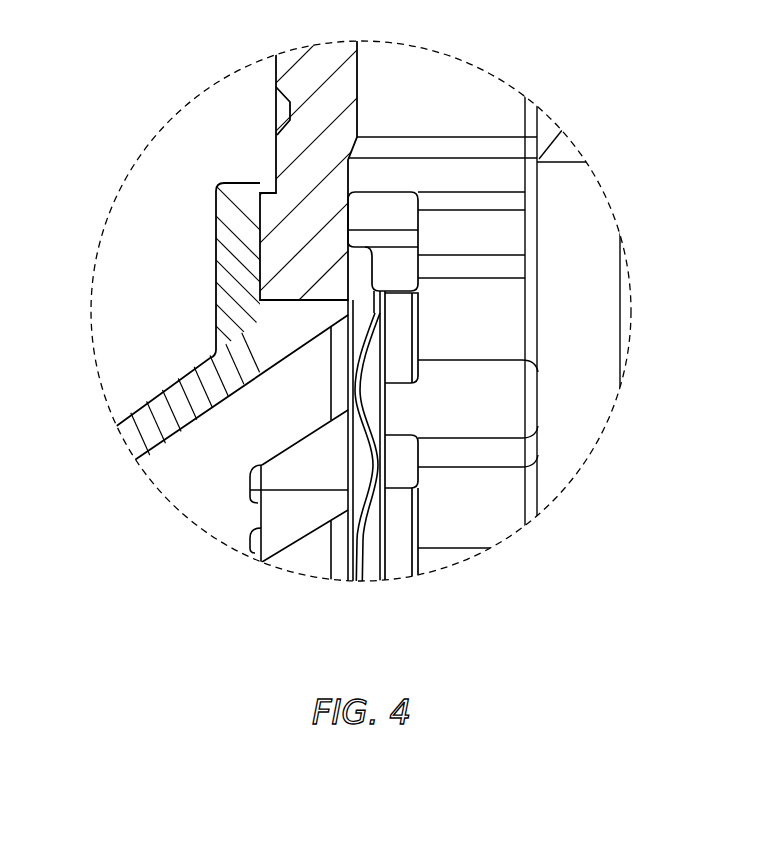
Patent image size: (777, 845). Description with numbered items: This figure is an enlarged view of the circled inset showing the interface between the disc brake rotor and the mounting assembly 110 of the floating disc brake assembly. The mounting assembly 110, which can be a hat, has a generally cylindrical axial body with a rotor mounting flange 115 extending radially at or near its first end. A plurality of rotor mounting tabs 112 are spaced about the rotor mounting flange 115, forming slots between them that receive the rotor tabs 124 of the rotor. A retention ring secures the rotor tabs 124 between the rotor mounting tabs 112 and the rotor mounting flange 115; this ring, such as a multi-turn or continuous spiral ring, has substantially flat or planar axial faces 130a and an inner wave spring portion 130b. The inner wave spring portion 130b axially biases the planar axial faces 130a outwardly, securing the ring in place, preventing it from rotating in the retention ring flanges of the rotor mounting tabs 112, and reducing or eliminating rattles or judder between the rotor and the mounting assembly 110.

The rotor tabs 124 is at (328, 48).
The rotor mounting tabs 112 is at (372, 207).
The rotor mounting flange 115 is at (216, 302).
The mounting assembly 110 is at (122, 443).
The planar axial faces 130a is at (390, 352).
The inner wave spring portion 130b is at (374, 540).